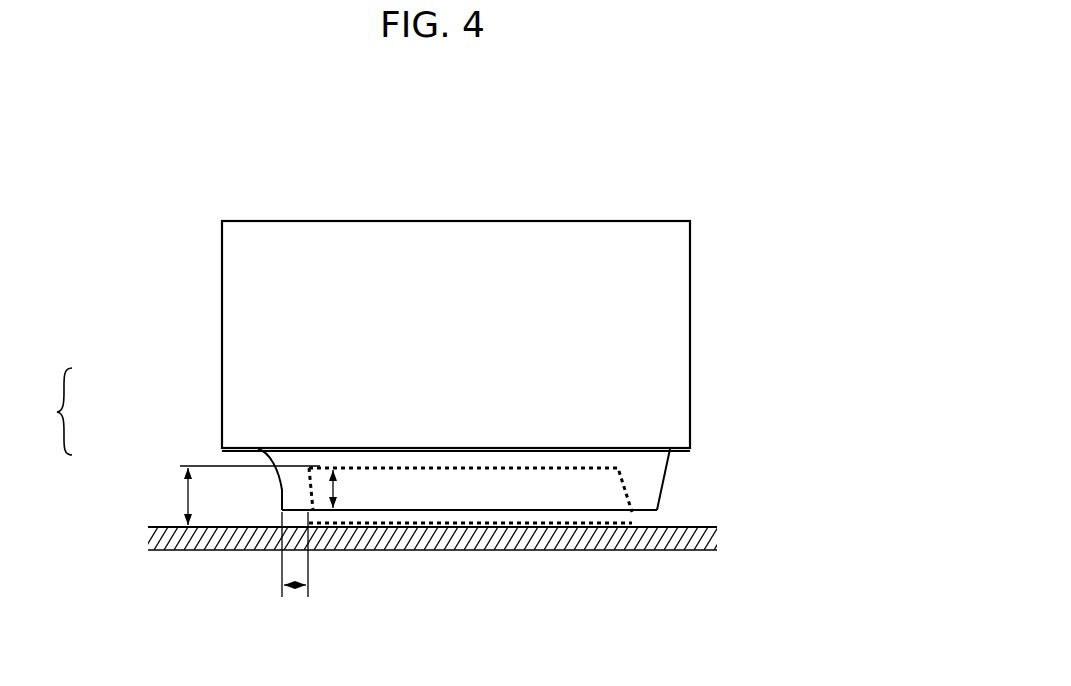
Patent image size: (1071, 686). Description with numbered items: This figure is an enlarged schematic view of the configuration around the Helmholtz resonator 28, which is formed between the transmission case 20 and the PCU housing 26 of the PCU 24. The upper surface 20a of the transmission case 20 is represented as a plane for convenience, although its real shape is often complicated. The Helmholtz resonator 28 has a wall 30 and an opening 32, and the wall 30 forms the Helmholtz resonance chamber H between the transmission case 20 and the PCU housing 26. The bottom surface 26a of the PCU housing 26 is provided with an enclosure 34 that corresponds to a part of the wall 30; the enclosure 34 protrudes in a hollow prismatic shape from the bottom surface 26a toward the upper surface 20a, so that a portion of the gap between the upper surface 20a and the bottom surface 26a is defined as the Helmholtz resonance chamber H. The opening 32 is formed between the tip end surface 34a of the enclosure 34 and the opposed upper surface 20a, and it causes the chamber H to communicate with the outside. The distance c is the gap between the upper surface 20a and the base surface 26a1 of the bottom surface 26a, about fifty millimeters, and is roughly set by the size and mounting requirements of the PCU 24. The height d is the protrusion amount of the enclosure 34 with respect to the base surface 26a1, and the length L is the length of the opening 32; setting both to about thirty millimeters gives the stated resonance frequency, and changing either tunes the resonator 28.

The transmission case 20 is at (161, 523).
The upper surface of the transmission case 20a is at (693, 527).
The PCU 24 is at (693, 197).
The PCU housing 26 is at (216, 378).
The bottom surface of the PCU housing 26a is at (257, 458).
The base surface of the bottom surface 26a1 is at (590, 474).
The Helmholtz resonator 28 is at (503, 467).
The wall 30 is at (47, 411).
The opening 32 is at (297, 523).
The enclosure 34 is at (274, 489).
The tip end surface of the enclosure 34a is at (282, 523).
The distance c is at (177, 496).
The height of the enclosure d is at (343, 489).
The length of the opening L is at (295, 571).
The Helmholtz resonance chamber H is at (631, 518).